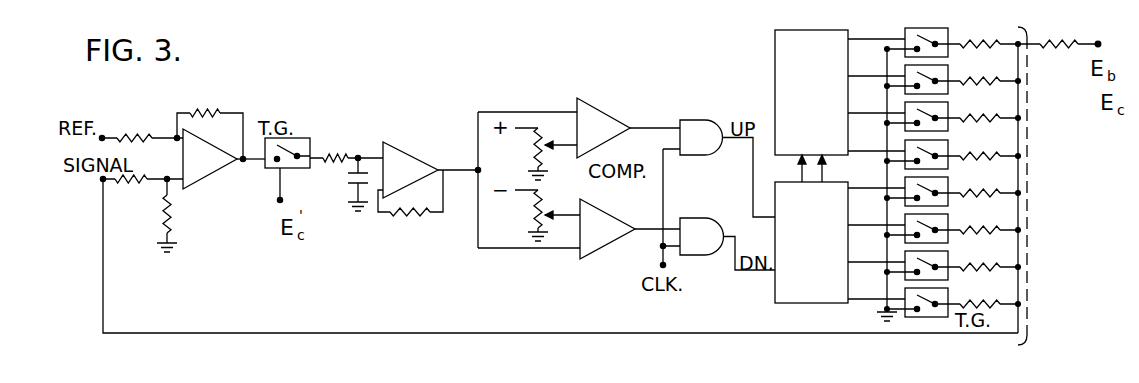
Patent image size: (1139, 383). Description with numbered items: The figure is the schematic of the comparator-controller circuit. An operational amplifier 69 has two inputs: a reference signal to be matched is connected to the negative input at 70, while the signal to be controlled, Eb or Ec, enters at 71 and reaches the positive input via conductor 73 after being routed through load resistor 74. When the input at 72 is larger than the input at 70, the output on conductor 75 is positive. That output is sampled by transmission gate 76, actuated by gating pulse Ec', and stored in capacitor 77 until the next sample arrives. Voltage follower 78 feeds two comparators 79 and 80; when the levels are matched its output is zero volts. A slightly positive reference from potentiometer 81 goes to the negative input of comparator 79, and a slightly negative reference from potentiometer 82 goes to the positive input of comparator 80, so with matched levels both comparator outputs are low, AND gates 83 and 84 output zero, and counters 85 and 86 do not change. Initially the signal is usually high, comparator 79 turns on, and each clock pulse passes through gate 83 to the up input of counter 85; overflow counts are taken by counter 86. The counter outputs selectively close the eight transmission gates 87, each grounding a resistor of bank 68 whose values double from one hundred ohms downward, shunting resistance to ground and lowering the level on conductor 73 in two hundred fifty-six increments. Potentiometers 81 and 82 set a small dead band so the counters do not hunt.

The resistor bank 68 is at (1027, 187).
The operational amplifier 69 is at (198, 142).
The negative input 70 is at (103, 138).
The signal input terminal 71 is at (1097, 41).
The signal input 72 is at (103, 180).
The conductor 73 is at (568, 332).
The load resistor 74 is at (1063, 51).
The output conductor 75 is at (244, 161).
The transmission gate 76 is at (297, 141).
The capacitor 77 is at (350, 176).
The voltage follower 78 is at (409, 155).
The comparator 79 is at (613, 113).
The comparator 80 is at (613, 214).
The potentiometer 81 is at (534, 133).
The potentiometer 82 is at (534, 205).
The AND gate 83 is at (701, 156).
The AND gate 84 is at (704, 220).
The counter 85 is at (801, 300).
The counter 86 is at (801, 150).
The transmission gates 87 is at (924, 30).